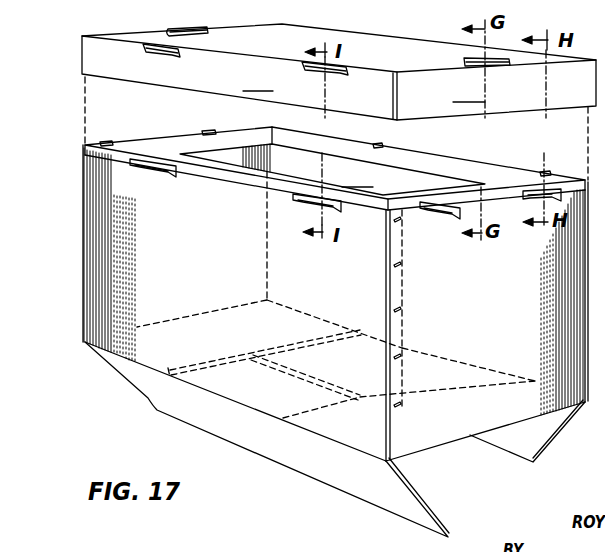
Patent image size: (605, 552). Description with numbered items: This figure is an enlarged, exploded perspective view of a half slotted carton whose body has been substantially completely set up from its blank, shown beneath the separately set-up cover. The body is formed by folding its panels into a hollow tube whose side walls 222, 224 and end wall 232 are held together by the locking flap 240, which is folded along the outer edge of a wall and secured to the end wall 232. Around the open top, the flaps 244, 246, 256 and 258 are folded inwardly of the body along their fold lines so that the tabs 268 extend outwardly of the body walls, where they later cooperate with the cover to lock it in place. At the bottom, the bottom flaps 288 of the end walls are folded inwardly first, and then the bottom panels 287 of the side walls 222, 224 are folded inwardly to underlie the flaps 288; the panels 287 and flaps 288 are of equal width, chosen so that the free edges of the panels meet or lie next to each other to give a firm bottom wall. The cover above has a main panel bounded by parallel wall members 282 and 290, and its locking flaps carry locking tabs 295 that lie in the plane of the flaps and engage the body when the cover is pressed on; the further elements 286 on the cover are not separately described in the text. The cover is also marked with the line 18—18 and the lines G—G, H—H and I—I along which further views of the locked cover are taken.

The section line 18- 18 is at (82, 43).
The side wall 222 is at (335, 168).
The side wall 224 is at (228, 275).
The end wall 232 is at (503, 305).
The locking flap 240 is at (403, 331).
The flap 244 is at (320, 150).
The flap 246 is at (255, 173).
The flap 256 is at (193, 141).
The flap 258 is at (440, 189).
The tab 268 is at (127, 141).
The wall member 282 is at (239, 78).
The lid latch tab 286 is at (170, 55).
The bottom panel 287 is at (421, 500).
The bottom flap 288 is at (215, 373).
The wall member 290 is at (339, 72).
The locking tab 295 is at (185, 28).